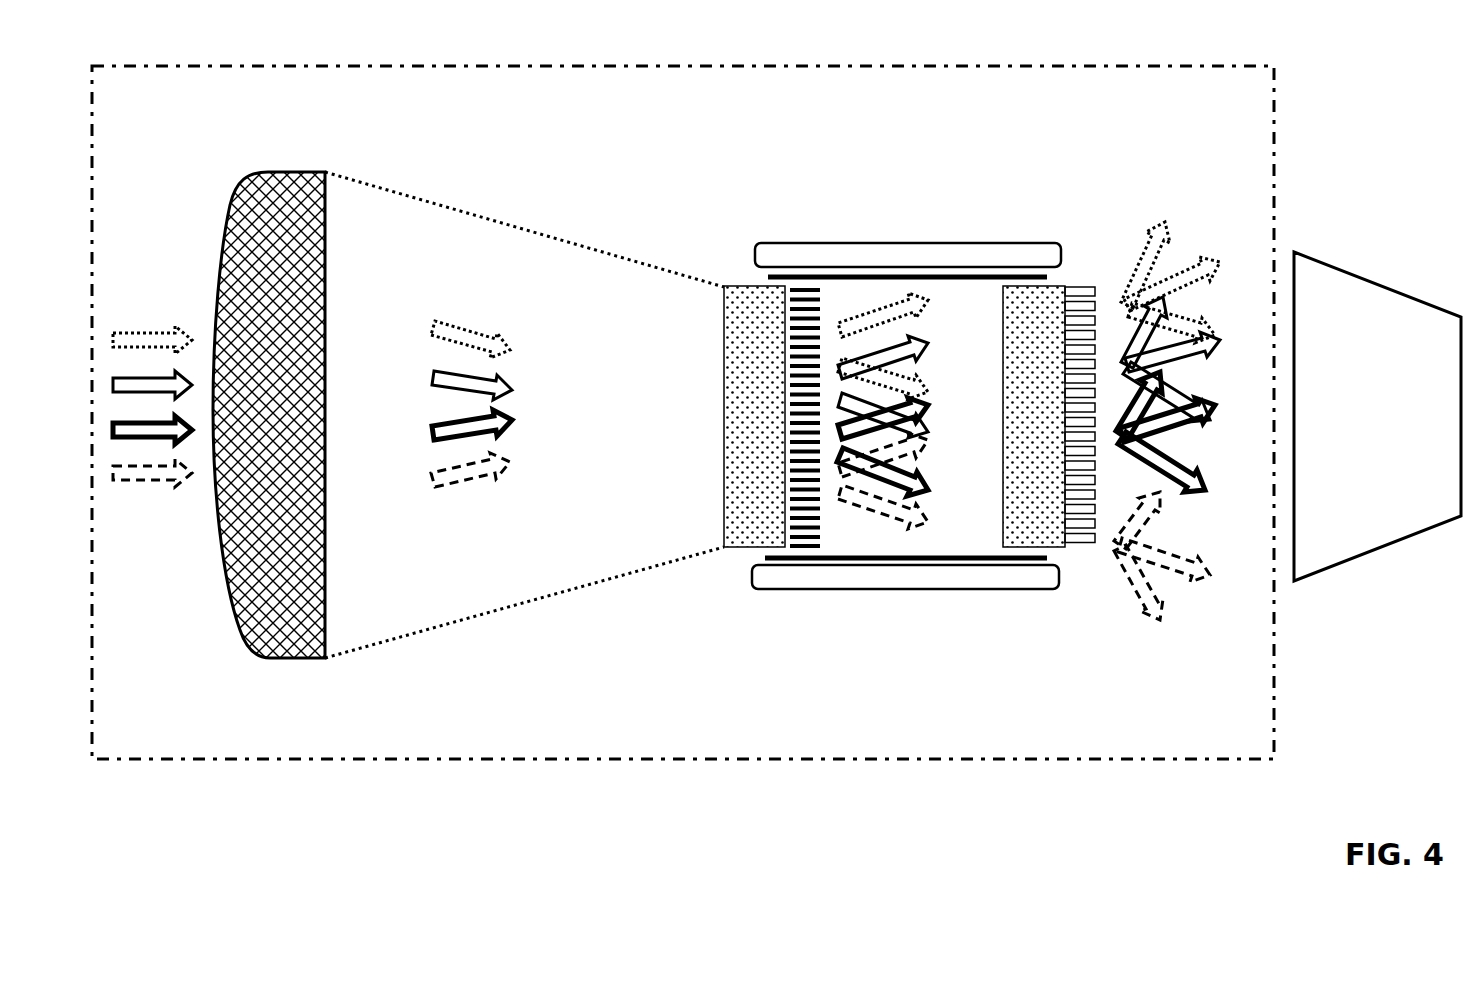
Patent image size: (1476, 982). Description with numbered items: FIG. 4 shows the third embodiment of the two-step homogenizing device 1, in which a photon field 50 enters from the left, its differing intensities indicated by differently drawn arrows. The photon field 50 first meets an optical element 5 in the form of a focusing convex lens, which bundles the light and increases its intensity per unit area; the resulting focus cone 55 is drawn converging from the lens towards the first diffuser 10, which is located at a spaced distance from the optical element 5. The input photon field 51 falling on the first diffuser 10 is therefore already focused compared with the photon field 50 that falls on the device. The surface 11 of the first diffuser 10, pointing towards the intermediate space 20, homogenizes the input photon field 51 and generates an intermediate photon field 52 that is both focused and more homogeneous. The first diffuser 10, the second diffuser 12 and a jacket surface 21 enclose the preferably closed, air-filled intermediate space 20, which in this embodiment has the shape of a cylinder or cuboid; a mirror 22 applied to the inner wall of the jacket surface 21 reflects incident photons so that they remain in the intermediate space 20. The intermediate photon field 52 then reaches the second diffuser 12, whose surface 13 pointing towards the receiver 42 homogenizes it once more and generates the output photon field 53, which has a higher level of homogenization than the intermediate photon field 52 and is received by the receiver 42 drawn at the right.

The homogenizing device 1 is at (226, 762).
The optical element 5 is at (266, 207).
The first diffuser 10 is at (750, 310).
The surface of the first diffuser 11 is at (815, 296).
The second diffuser 12 is at (1053, 300).
The surface of the second diffuser 13 is at (1084, 289).
The intermediate space 20 is at (963, 430).
The jacket surface 21 is at (784, 580).
The mirror 22 is at (849, 562).
The receiver 42 is at (1371, 281).
The photon field 50 is at (152, 325).
The input photon field 51 is at (466, 472).
The intermediate photon field 52 is at (868, 330).
The output photon field 53 is at (1184, 250).
The focus cone 55 is at (516, 216).